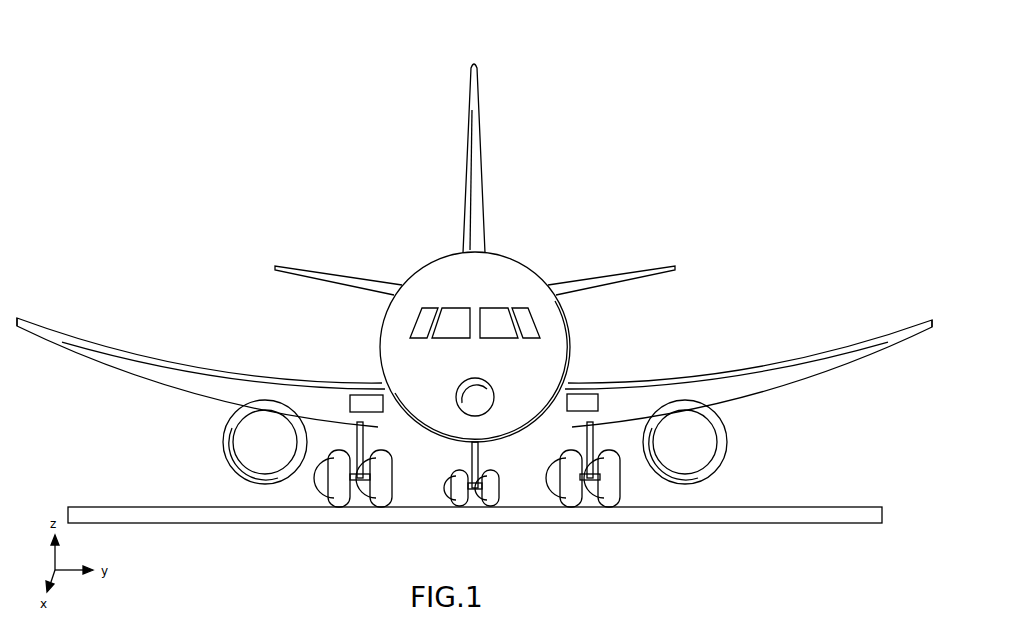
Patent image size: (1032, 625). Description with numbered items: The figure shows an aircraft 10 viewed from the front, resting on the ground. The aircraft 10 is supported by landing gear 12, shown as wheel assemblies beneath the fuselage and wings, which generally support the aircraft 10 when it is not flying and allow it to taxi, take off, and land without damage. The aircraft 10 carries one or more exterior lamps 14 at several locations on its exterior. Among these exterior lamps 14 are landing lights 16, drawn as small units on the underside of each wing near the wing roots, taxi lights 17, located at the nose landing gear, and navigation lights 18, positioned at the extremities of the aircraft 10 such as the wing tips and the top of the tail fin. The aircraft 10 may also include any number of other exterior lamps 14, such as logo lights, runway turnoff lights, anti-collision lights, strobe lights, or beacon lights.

The aircraft 10 is at (368, 75).
The landing gear 12 is at (512, 464).
The exterior lamps 14 is at (614, 350).
The landing lights 16 is at (350, 403).
The taxi lights 17 is at (472, 458).
The navigation lights 18 is at (483, 258).